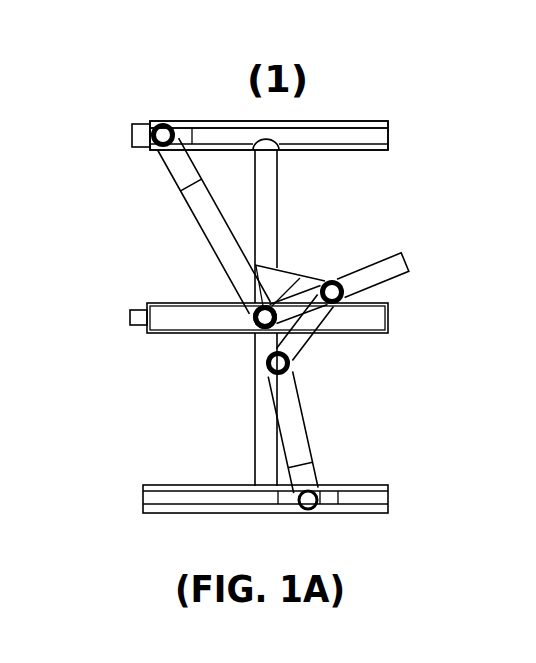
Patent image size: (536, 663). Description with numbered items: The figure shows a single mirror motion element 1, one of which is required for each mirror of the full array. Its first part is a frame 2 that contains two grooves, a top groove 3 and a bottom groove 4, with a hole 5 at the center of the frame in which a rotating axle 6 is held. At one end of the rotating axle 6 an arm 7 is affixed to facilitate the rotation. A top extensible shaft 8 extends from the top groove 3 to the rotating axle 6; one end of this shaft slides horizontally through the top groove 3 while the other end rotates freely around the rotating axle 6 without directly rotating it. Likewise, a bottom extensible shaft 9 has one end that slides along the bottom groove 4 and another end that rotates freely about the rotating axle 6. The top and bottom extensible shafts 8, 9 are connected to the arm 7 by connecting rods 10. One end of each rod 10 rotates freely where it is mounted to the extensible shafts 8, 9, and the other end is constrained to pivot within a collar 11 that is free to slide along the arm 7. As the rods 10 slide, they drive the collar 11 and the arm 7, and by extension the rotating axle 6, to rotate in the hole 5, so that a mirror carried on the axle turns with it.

The single mirror motion element 1 is at (289, 312).
The frame 2 is at (357, 122).
The top groove 3 is at (388, 133).
The bottom groove 4 is at (142, 505).
The hole 5 is at (253, 328).
The rotating axle 6 is at (253, 328).
The arm 7 is at (415, 250).
The top extensible shaft 8 is at (202, 235).
The bottom extensible shaft 9 is at (314, 418).
The connecting rods 10 is at (323, 338).
The collar 11 is at (336, 272).